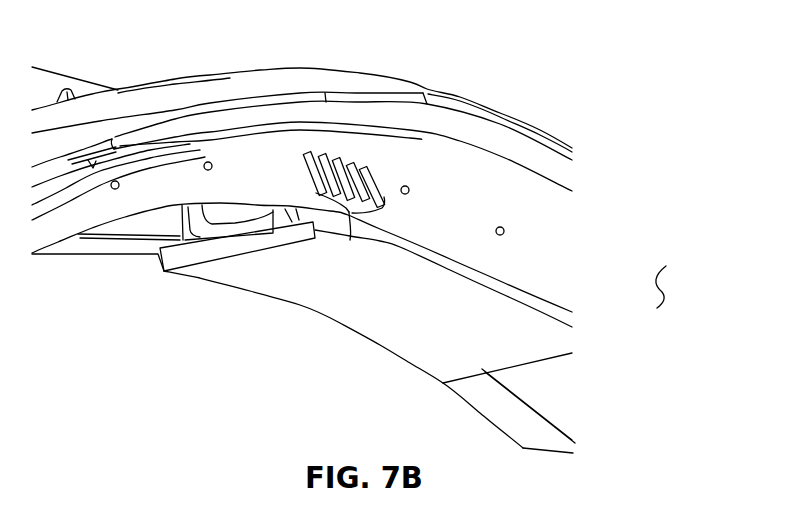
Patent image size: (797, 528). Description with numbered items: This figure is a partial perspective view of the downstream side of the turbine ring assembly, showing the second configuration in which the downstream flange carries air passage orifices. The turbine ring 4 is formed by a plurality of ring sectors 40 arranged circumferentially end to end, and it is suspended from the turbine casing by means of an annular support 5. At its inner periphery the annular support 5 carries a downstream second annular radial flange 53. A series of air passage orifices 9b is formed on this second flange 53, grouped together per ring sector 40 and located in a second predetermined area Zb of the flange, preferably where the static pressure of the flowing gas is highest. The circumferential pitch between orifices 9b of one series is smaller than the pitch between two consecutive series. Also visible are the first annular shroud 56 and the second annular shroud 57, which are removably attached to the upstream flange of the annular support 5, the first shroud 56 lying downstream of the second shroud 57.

The turbine ring 4 is at (672, 279).
The annular support 5 is at (532, 120).
The air passage orifices 9b is at (370, 170).
The ring sector 40 is at (530, 347).
The second annular radial flange 53 is at (560, 263).
The first annular shroud 56 is at (562, 398).
The second annular shroud 57 is at (536, 440).
The second predetermined area Zb is at (350, 240).